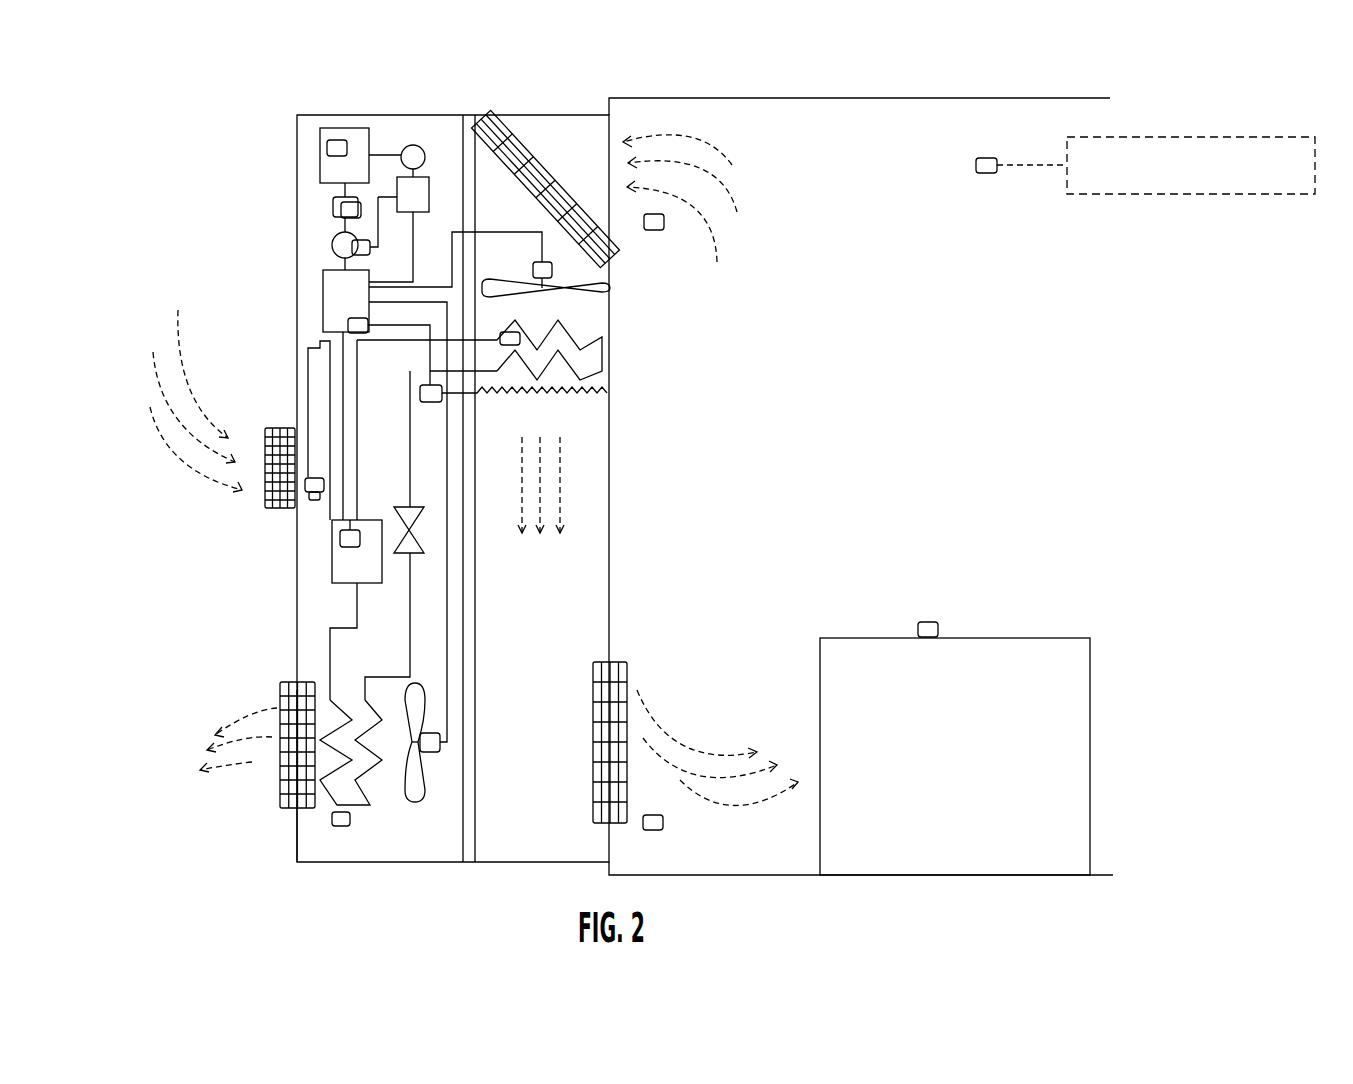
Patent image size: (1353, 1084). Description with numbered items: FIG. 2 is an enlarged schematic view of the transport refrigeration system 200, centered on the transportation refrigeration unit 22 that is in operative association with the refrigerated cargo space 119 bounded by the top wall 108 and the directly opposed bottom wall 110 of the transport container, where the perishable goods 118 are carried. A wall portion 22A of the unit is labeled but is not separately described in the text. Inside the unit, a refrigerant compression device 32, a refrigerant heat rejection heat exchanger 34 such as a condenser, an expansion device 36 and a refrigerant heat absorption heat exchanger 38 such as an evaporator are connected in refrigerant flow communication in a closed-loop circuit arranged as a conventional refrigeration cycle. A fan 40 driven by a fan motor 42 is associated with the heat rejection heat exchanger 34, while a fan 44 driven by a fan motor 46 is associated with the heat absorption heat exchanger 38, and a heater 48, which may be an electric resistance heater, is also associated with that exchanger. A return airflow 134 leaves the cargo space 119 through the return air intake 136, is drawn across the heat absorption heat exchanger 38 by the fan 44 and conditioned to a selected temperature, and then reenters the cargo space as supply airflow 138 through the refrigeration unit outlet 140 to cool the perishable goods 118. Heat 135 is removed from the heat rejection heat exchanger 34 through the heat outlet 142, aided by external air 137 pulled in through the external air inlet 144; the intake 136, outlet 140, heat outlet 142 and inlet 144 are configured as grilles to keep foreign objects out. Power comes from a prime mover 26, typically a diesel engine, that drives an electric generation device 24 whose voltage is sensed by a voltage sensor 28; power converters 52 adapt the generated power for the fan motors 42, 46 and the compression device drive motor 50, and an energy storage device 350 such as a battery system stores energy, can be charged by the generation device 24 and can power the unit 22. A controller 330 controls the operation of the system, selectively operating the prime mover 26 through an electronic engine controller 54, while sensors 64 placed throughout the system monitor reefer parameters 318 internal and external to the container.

The transport refrigeration system 200 is at (145, 150).
The transportation refrigeration unit 22 is at (295, 127).
The housing wall 22A is at (293, 813).
The electric generation device 24 is at (333, 200).
The prime mover 26 is at (320, 148).
The voltage sensor 28 is at (333, 250).
The refrigerant compression device 32 is at (332, 573).
The refrigerant heat rejection heat exchanger 34 is at (357, 807).
The expansion device 36 is at (424, 540).
The refrigerant heat absorption heat exchanger 38 is at (602, 340).
The fan 40 is at (415, 795).
The fan motor 42 is at (440, 752).
The fan 44 is at (600, 292).
The fan motor 46 is at (533, 270).
The heater 48 is at (609, 393).
The compression device drive motor 50 is at (332, 536).
The power converter 52 is at (323, 303).
The electronic engine controller 54 is at (426, 158).
The sensor 64 is at (337, 157).
The top wall 108 is at (890, 97).
The bottom wall 110 is at (708, 872).
The perishable goods 118 is at (817, 648).
The refrigerated cargo space 119 is at (990, 315).
The return airflow 134 is at (738, 200).
The heat 135 is at (220, 765).
The return air intake 136 is at (548, 160).
The external air 137 is at (152, 388).
The supply airflow 138 is at (688, 740).
The refrigeration unit outlet 140 is at (590, 665).
The heat outlet 142 is at (280, 690).
The external air inlet 144 is at (270, 472).
The reefer parameters 318 is at (1210, 136).
The controller 330 is at (417, 202).
The energy storage device 350 is at (320, 362).